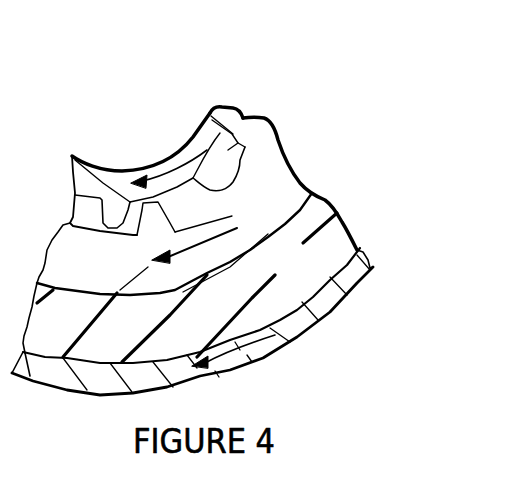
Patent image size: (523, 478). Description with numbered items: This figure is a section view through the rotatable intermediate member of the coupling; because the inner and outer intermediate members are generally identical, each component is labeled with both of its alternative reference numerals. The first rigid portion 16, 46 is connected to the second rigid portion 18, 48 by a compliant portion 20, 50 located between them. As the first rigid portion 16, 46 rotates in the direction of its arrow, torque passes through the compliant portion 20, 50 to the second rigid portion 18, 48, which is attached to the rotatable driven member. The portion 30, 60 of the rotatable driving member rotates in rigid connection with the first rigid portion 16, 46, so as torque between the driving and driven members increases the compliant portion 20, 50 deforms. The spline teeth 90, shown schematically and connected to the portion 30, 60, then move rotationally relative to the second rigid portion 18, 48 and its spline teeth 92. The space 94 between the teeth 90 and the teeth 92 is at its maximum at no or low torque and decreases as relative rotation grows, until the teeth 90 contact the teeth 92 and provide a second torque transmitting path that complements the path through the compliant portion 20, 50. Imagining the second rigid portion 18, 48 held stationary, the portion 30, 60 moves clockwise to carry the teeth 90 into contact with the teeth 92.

The first rigid portion 16 is at (247, 321).
The first rigid portion 46 is at (332, 302).
The second rigid portion 18 is at (228, 228).
The second rigid portion 48 is at (248, 206).
The compliant portion 20 is at (251, 268).
The compliant portion 50 is at (335, 232).
The portion of the rotatable driving member 30 is at (239, 74).
The portion of the rotatable driving member 60 is at (230, 122).
The spline teeth 90 is at (112, 213).
The spline teeth 92 is at (248, 150).
The space 94 is at (192, 202).